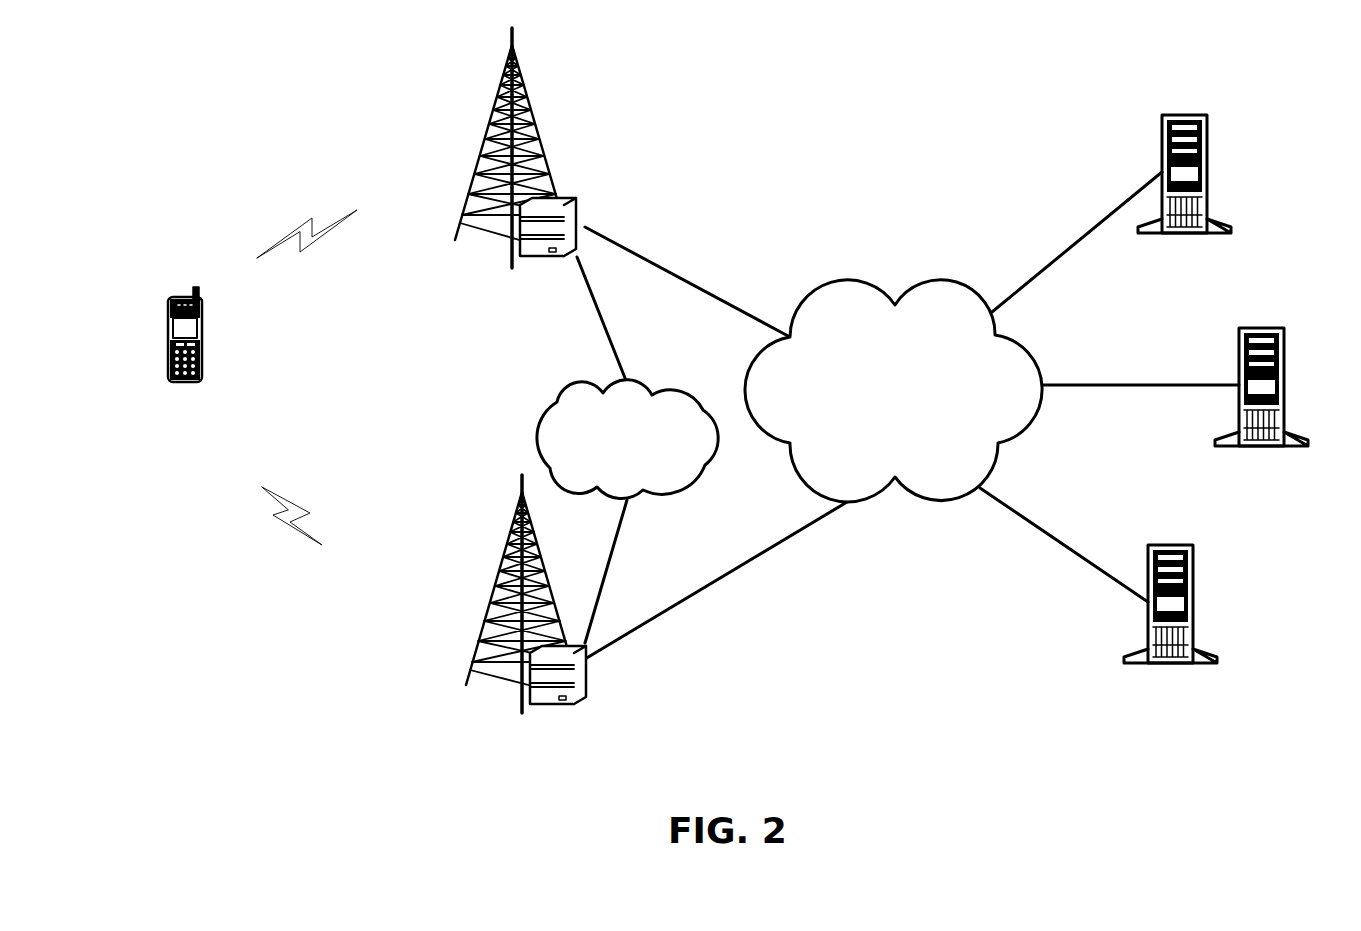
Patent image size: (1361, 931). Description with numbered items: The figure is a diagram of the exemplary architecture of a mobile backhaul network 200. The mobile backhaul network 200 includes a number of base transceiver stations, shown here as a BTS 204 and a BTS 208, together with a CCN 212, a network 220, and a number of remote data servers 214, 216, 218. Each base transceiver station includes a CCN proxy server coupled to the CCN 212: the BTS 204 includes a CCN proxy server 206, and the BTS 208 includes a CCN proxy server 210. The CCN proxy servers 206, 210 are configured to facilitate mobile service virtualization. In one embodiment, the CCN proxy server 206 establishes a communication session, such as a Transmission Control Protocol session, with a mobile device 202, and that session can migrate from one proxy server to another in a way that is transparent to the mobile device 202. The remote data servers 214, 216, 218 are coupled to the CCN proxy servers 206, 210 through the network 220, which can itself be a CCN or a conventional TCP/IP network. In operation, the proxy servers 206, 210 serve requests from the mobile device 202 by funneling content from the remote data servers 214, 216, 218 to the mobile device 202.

The mobile backhaul network 200 is at (733, 402).
The mobile device 202 is at (165, 333).
The BTS 204 is at (505, 563).
The CCN proxy server 206 is at (587, 672).
The BTS 208 is at (498, 117).
The CCN proxy server 210 is at (577, 200).
The CCN 212 is at (627, 439).
The data server 214 is at (1208, 173).
The data server 216 is at (1285, 387).
The data server 218 is at (1195, 603).
The network 220 is at (893, 391).